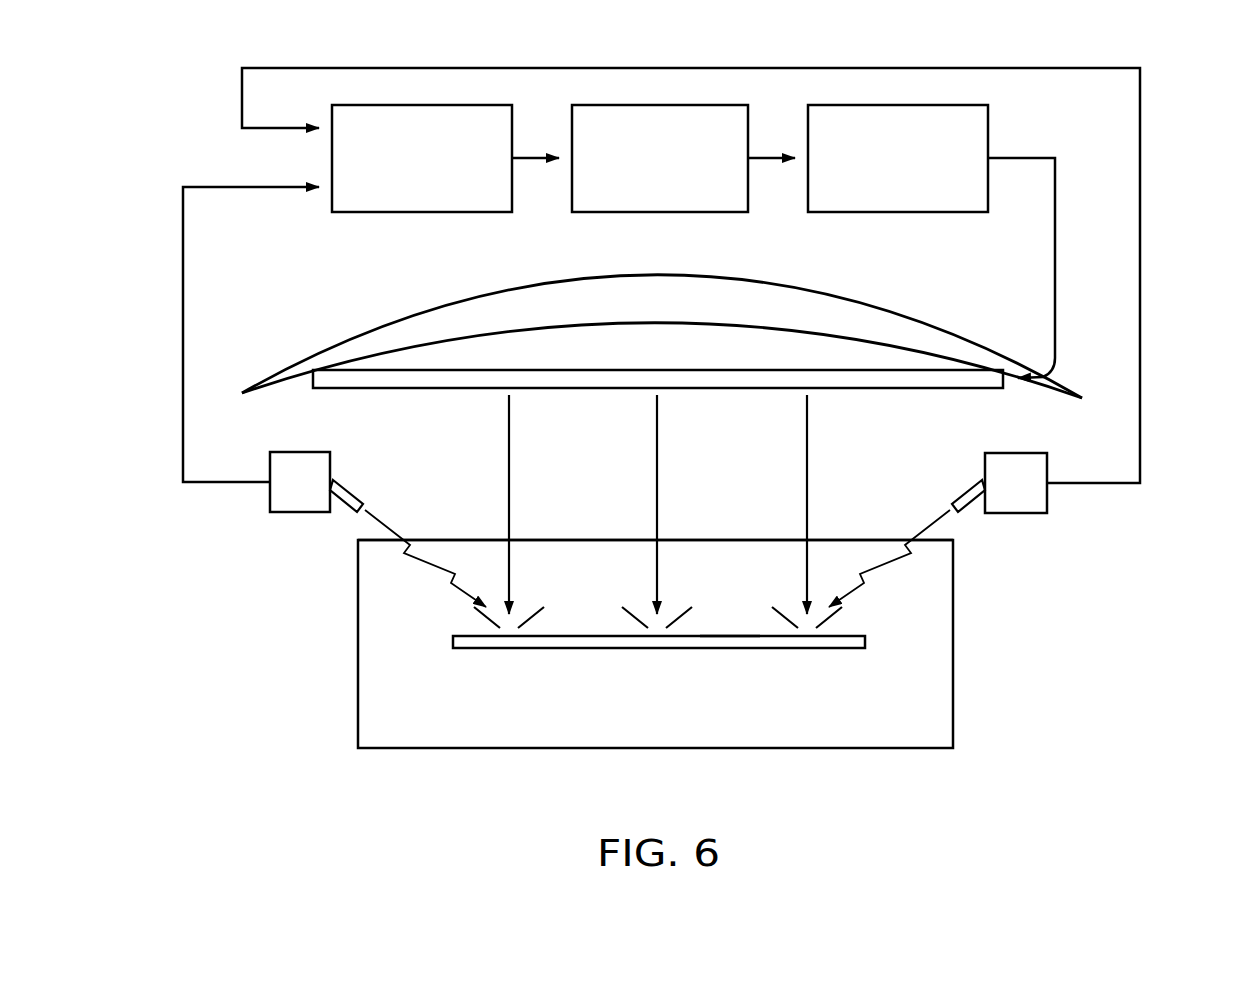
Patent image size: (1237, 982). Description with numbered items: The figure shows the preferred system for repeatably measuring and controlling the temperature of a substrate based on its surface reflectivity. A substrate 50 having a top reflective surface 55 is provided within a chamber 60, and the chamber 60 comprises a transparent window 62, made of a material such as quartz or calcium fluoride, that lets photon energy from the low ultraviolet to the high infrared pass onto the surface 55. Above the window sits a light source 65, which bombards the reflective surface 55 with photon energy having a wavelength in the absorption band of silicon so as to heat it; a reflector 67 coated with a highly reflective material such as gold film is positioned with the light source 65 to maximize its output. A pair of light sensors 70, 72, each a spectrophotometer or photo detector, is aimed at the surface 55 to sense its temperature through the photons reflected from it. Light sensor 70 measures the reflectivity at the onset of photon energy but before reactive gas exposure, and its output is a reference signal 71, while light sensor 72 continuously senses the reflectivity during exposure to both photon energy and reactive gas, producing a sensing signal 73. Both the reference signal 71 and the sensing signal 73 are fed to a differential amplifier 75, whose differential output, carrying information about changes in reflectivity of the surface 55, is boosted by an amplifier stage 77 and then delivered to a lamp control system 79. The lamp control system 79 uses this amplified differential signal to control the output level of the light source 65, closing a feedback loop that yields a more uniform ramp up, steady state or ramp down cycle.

The substrate 50 is at (790, 645).
The top reflective surface 55 is at (725, 623).
The chamber 60 is at (440, 752).
The transparent window 62 is at (580, 540).
The light source 65 is at (867, 385).
The reflector 67 is at (717, 297).
The light sensor 70 is at (1015, 497).
The reference signal 71 is at (1142, 325).
The light sensor 72 is at (300, 492).
The sensing signal 73 is at (181, 322).
The differential amplifier 75 is at (392, 213).
The amplifier stage 77 is at (630, 213).
The lamp control system 79 is at (927, 213).